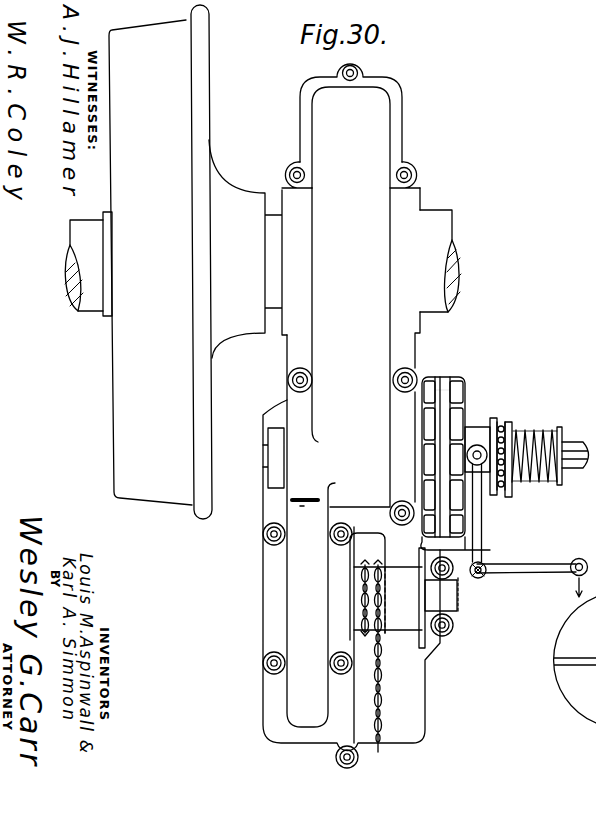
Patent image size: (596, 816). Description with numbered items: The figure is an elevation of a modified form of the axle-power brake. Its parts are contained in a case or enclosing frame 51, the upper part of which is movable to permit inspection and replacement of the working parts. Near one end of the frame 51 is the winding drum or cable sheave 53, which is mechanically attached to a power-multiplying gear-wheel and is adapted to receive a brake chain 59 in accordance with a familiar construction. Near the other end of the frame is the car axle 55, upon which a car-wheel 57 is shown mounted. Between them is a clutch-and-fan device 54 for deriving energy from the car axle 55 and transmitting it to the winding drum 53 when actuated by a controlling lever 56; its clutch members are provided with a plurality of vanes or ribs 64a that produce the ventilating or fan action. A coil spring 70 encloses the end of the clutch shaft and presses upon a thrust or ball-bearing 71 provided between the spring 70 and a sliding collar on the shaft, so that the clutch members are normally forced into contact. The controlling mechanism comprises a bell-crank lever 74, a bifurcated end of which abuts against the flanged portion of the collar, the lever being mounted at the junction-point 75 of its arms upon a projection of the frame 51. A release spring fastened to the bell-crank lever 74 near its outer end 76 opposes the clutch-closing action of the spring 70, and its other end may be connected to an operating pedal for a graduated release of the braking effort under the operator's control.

The case or enclosing frame 51 is at (376, 225).
The winding drum or cable sheave 53 is at (413, 650).
The clutch-and-fan device 54 is at (481, 367).
The car axle 55 is at (440, 229).
The controlling lever 56 is at (560, 555).
The car-wheel 57 is at (122, 367).
The brake chain 59 is at (383, 717).
The vanes or ribs 64a is at (430, 405).
The coil spring 70 is at (528, 431).
The thrust or ball-bearing 71 is at (503, 425).
The bell-crank lever 74 is at (483, 521).
The junction-point 75 is at (480, 578).
The outer end of bell-crank lever 76 is at (572, 574).